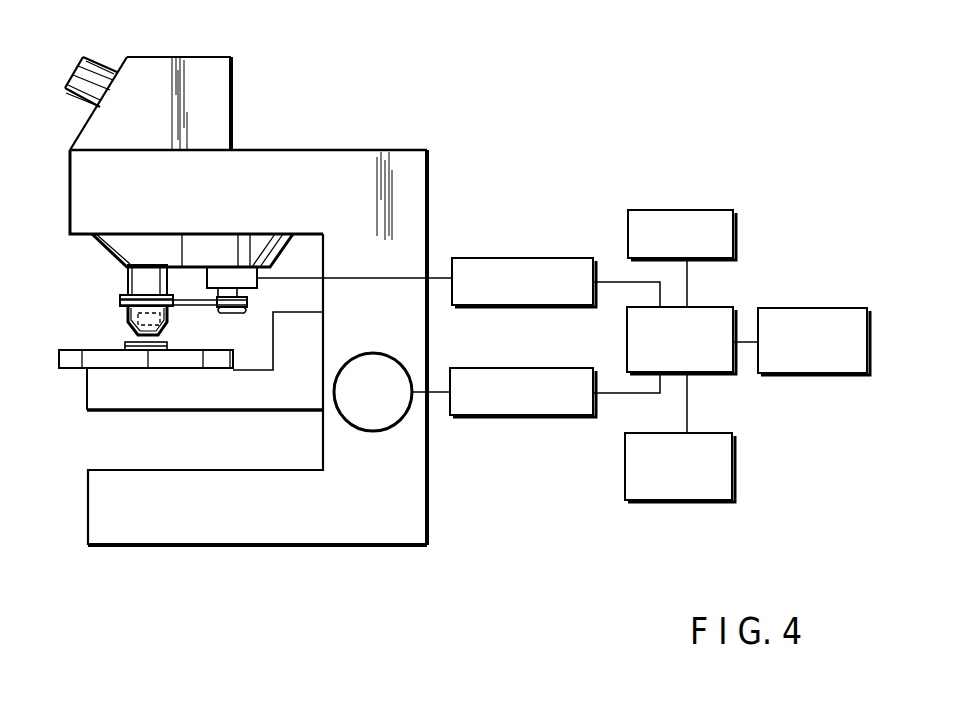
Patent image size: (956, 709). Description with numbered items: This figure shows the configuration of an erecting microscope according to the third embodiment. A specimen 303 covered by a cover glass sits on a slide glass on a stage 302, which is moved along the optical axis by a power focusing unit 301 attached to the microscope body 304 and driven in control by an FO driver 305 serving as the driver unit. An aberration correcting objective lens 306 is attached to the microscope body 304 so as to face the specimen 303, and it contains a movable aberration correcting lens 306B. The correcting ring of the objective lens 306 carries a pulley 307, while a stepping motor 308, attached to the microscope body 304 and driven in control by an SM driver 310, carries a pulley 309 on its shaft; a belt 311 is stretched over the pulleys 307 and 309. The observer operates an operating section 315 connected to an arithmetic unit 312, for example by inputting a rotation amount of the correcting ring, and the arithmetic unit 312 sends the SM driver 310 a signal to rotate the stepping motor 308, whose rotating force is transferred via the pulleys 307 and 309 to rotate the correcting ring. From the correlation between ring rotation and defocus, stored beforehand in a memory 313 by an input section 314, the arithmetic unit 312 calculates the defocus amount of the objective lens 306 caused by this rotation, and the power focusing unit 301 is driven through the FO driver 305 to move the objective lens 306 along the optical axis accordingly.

The power focusing unit 301 is at (346, 360).
The stage 302 is at (93, 388).
The specimen 303 is at (127, 343).
The microscope body 304 is at (423, 520).
The FO driver 305 is at (565, 418).
The aberration correcting objective lens 306 is at (127, 277).
The movable aberration correcting lens 306B is at (172, 328).
The pulley 307 is at (122, 298).
The stepping motor 308 is at (218, 278).
The pulley 309 is at (243, 288).
The SM driver 310 is at (567, 308).
The belt 311 is at (120, 303).
The arithmetic unit 312 is at (712, 375).
The memory 313 is at (688, 210).
The input section 314 is at (838, 375).
The operating section 315 is at (710, 502).